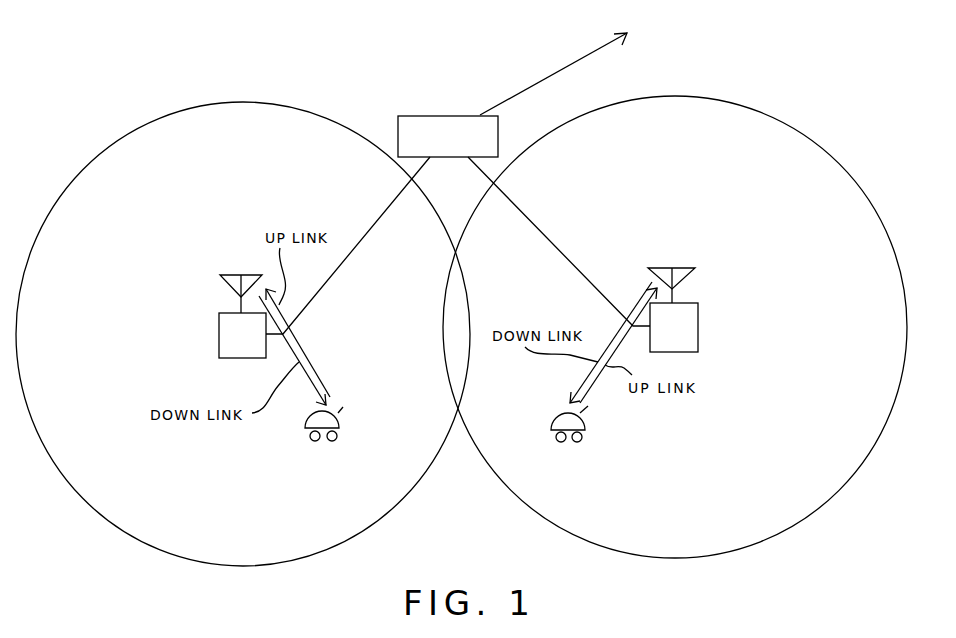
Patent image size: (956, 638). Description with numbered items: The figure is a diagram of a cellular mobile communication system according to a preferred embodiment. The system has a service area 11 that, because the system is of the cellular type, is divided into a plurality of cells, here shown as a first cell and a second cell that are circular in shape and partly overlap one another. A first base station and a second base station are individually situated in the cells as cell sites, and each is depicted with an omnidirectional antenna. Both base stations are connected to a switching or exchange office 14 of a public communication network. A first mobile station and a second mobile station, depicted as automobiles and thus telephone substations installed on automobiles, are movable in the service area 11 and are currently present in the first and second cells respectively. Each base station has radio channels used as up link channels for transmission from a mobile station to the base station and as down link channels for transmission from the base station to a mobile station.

The service area 11 is at (424, 571).
The exchange office 14 is at (447, 116).